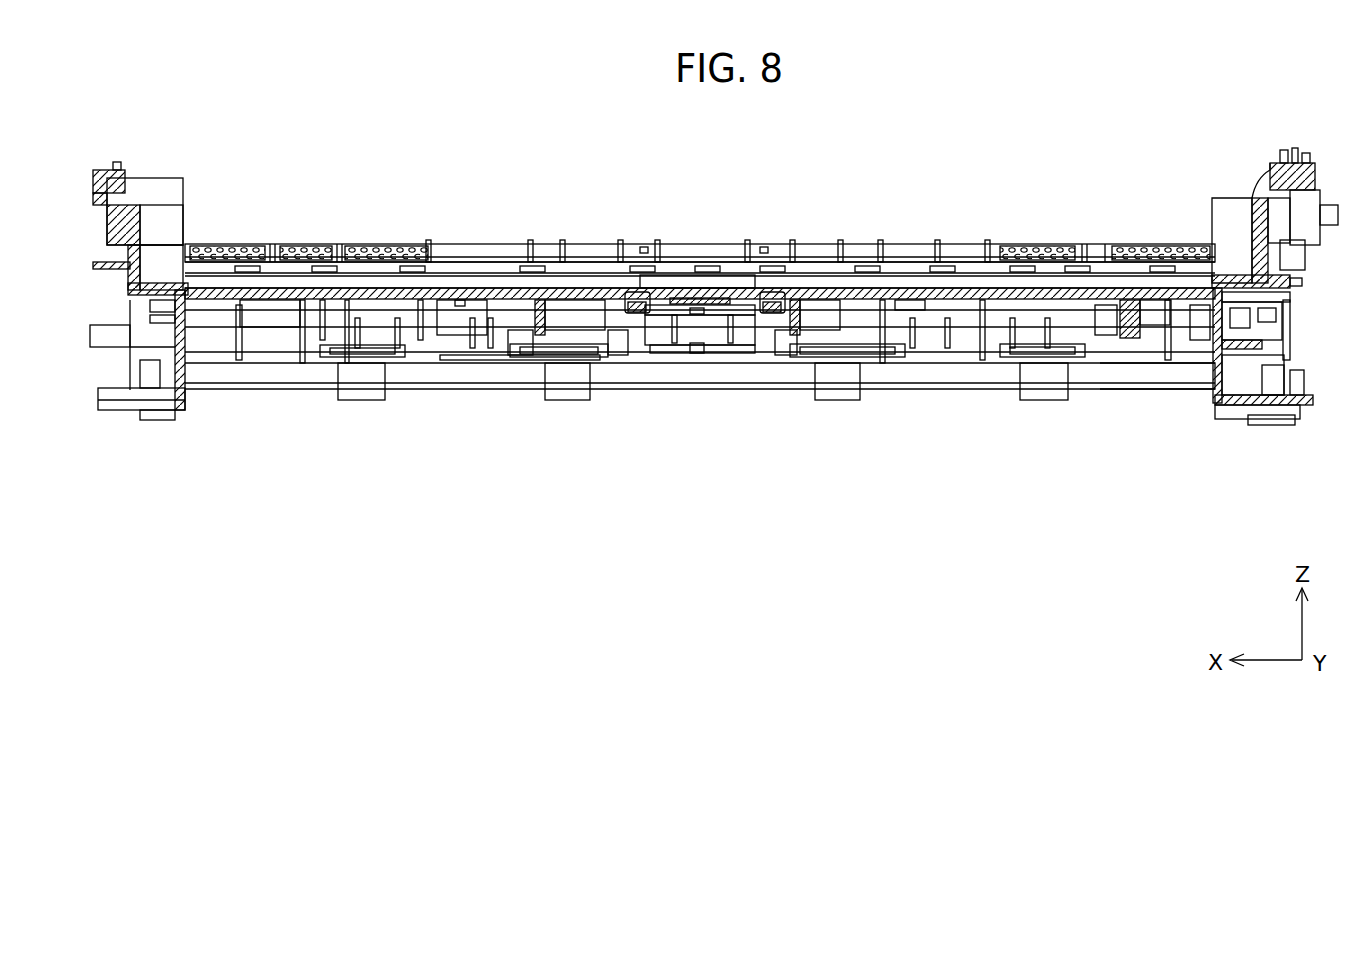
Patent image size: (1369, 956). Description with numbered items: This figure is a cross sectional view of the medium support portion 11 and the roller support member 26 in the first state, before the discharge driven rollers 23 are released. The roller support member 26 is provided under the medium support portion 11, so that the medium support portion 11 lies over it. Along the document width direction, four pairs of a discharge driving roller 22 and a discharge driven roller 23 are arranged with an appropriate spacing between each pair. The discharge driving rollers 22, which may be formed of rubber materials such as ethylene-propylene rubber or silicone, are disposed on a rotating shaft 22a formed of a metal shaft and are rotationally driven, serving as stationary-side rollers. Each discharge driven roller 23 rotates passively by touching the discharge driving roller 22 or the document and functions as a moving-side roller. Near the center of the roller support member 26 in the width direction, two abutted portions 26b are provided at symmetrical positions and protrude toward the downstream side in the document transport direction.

The medium support portion 11 is at (513, 287).
The discharge driving roller 22 is at (362, 380).
The rotating shaft 22a is at (1155, 376).
The discharge driven roller 23 is at (336, 357).
The roller support member 26 is at (690, 330).
The abutted portion 26b is at (640, 315).